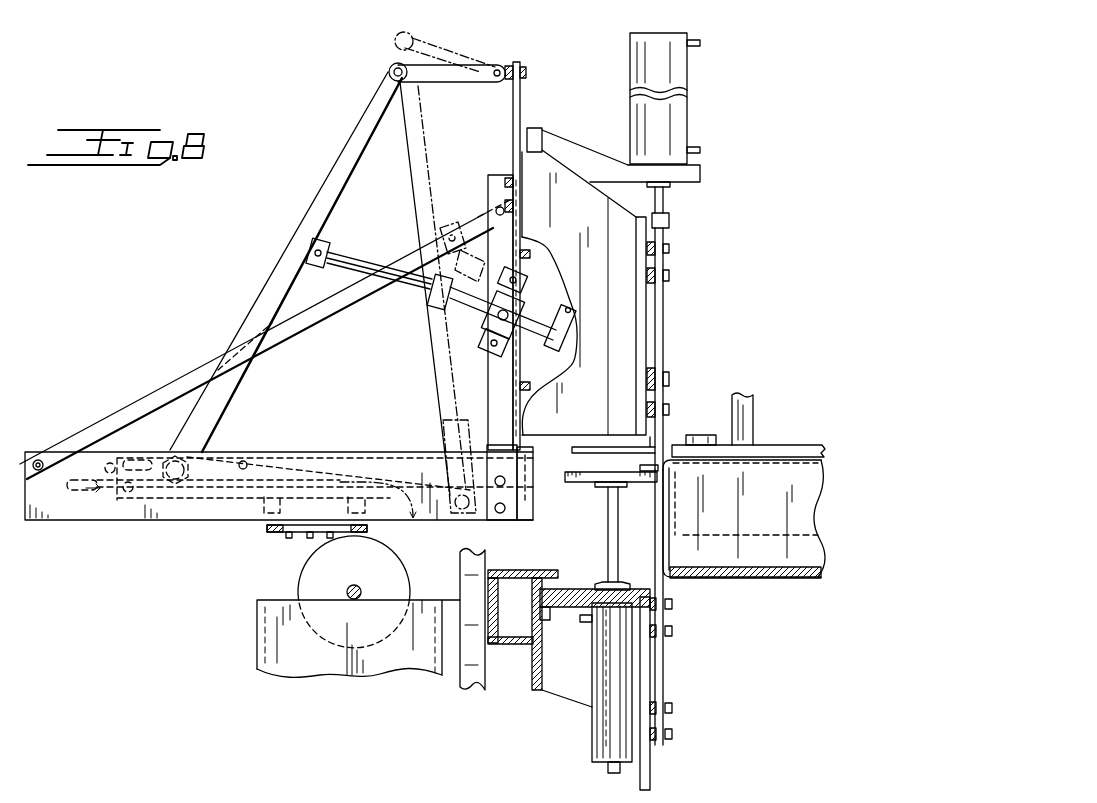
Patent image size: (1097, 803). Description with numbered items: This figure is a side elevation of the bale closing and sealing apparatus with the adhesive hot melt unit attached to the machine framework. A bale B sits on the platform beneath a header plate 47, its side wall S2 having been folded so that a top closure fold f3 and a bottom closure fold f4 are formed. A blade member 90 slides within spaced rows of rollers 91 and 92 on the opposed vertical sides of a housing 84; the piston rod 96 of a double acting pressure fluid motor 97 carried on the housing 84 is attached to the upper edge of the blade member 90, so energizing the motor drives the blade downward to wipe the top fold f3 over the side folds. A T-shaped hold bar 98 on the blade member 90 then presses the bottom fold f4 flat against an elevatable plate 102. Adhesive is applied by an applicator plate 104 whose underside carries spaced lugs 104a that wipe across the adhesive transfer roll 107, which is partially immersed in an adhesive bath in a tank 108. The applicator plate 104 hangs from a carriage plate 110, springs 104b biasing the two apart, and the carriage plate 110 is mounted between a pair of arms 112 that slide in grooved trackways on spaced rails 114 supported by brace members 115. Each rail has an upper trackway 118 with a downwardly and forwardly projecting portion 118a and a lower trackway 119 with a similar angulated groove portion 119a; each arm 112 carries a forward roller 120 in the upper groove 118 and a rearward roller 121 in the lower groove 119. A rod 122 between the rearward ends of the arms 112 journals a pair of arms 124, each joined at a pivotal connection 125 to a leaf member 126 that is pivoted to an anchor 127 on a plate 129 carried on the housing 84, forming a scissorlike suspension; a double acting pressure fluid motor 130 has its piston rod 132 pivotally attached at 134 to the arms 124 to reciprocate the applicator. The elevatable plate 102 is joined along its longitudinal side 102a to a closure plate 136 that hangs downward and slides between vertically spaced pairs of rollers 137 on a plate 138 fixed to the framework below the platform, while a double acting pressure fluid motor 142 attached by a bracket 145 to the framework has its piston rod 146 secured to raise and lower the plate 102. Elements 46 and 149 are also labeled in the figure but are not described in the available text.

The housing 46 is at (797, 578).
The header plate 47 is at (783, 447).
The housing 84 is at (562, 165).
The blade member 90 is at (664, 320).
The rollers 91 is at (669, 247).
The rollers 92 is at (670, 380).
The piston rod 96 is at (671, 196).
The double acting pressure fluid motor 97 is at (690, 110).
The T-shaped hold bar 98 is at (585, 447).
The elevatable plate 102 is at (586, 483).
The longitudinal side of elevatable plate 102a is at (657, 466).
The applicator plate 104 is at (266, 529).
The lugs or pins 104a is at (330, 539).
The springs 104b is at (263, 514).
The adhesive transfer roll 107 is at (297, 586).
The tank 108 is at (332, 679).
The carriage plate 110 is at (348, 460).
The arms 112 is at (182, 493).
The rails 114 is at (70, 521).
The brace members 115 is at (132, 411).
The upper trackway 118 is at (393, 460).
The projecting portion of upper trackway 118a is at (530, 513).
The lower trackway 119 is at (203, 499).
The groove portion of lower trackway 119a is at (413, 520).
The roller 120 is at (247, 461).
The roller 121 is at (128, 493).
The rod 122 is at (173, 460).
The arms 124 is at (292, 262).
The pivotal connection 125 is at (412, 32).
The leaf member 126 is at (466, 82).
The anchor 127 is at (509, 64).
The plate 129 is at (521, 94).
The double acting pressure fluid motor 130 is at (433, 308).
The piston rod 132 is at (366, 266).
The pivotal attachment 134 is at (328, 247).
The closure plate 136 is at (655, 550).
The rollers 137 is at (673, 605).
The plate 138 is at (651, 683).
The double acting pressure fluid motor 142 is at (586, 734).
The bracket 145 is at (572, 586).
The piston rod 146 is at (607, 526).
The piston rod 149 is at (600, 748).
The bale B is at (758, 506).
The side wall of bale S2 is at (760, 554).
The top closure fold f3 is at (675, 510).
The bottom closure fold f4 is at (668, 517).